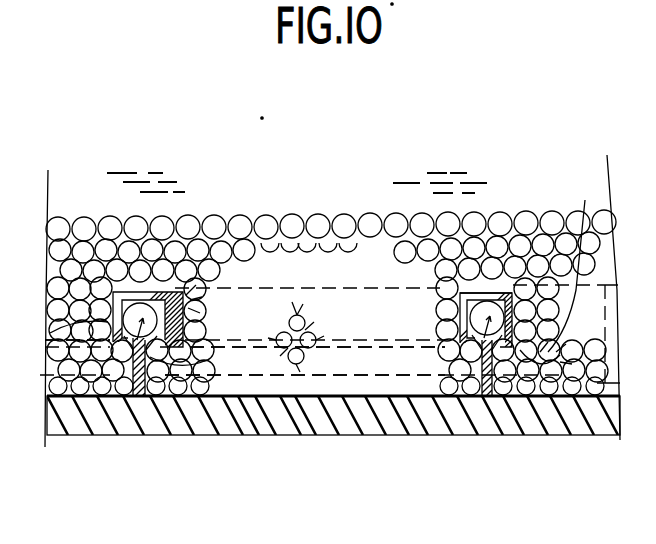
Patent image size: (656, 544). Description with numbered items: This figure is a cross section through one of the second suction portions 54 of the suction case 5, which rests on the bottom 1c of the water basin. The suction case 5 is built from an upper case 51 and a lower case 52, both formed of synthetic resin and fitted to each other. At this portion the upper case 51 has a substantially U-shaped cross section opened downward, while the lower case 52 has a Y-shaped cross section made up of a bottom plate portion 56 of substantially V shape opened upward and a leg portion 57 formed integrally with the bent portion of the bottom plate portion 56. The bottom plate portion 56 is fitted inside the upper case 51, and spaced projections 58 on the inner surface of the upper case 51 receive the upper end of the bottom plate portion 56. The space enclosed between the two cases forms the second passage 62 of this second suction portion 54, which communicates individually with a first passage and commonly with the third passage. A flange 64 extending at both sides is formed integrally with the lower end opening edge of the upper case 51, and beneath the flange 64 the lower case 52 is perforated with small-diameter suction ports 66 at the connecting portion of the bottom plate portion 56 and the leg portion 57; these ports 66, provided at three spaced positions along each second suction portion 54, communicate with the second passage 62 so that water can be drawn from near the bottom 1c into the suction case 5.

The bottom 1c is at (260, 425).
The suction case 5 is at (150, 305).
The upper case 51 is at (470, 292).
The lower case 52 is at (486, 397).
The second suction portion 54 is at (440, 312).
The bottom plate portion 56 is at (214, 345).
The leg portion 57 is at (141, 425).
The projection 58 is at (437, 283).
The second passage 62 is at (112, 302).
The flange 64 is at (62, 340).
The small-diameter suction port 66 is at (253, 203).